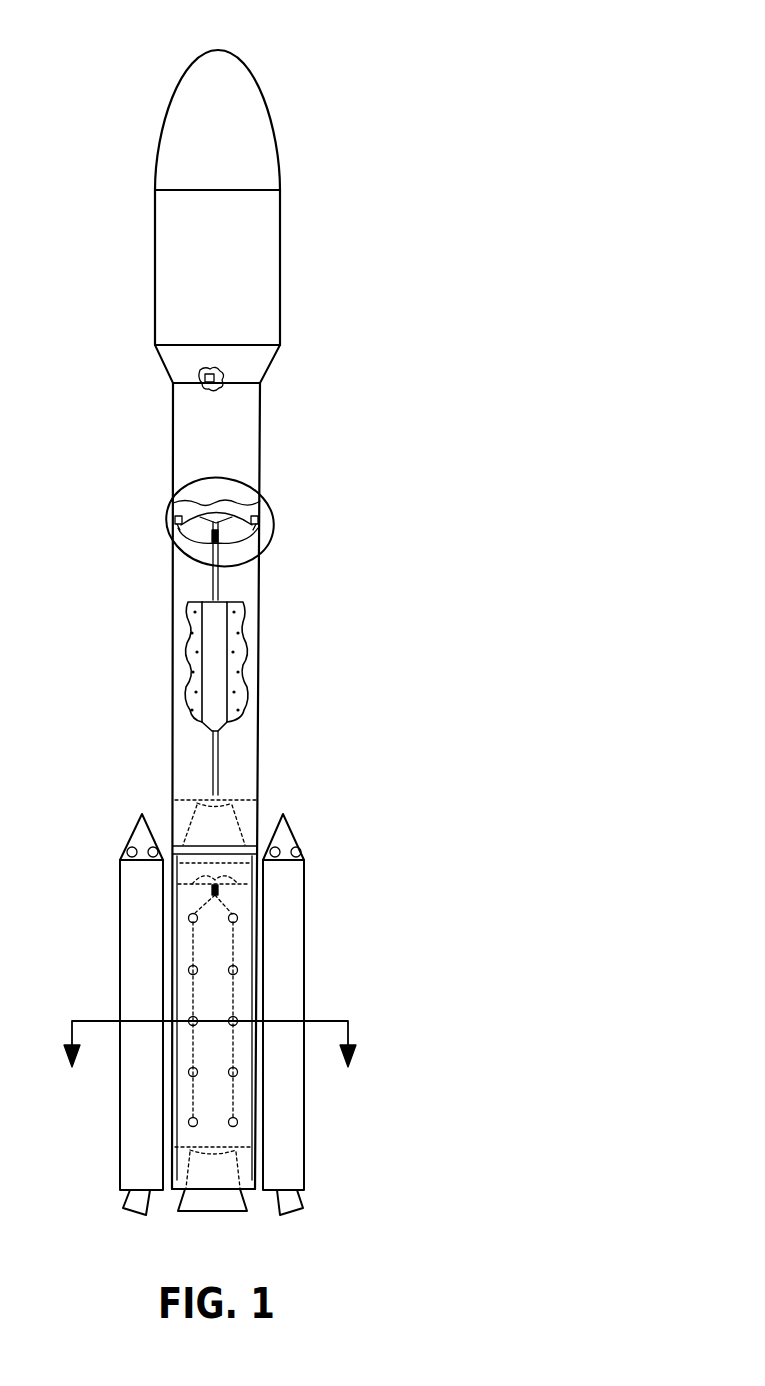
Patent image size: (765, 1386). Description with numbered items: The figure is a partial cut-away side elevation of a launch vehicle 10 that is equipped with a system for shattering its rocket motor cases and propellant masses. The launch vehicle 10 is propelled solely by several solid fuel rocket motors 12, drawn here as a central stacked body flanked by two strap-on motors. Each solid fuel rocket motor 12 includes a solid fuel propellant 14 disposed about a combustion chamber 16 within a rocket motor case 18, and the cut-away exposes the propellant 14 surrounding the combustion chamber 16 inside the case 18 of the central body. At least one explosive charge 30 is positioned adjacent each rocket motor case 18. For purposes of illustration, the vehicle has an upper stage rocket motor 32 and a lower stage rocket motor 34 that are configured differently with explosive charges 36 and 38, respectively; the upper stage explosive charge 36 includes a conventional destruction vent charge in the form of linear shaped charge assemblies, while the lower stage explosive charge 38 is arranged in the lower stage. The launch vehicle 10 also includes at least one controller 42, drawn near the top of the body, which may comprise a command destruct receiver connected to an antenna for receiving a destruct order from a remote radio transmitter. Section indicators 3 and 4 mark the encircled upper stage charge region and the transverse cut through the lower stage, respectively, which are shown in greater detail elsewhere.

The launch vehicle 10 is at (362, 112).
The solid fuel rocket motor 12 is at (240, 760).
The solid fuel propellant 14 is at (245, 690).
The combustion chamber 16 is at (213, 660).
The rocket motor case 18 is at (262, 593).
The explosive charge 30 is at (312, 708).
The upper stage rocket motor 32 is at (188, 589).
The lower stage rocket motor 34 is at (183, 945).
The upper stage explosive charge 36 is at (214, 585).
The lower stage explosive charge 38 is at (198, 916).
The controller 42 is at (200, 383).
The section 3 indicator 3 is at (170, 493).
The section 4-4 indicator 4 is at (211, 1065).